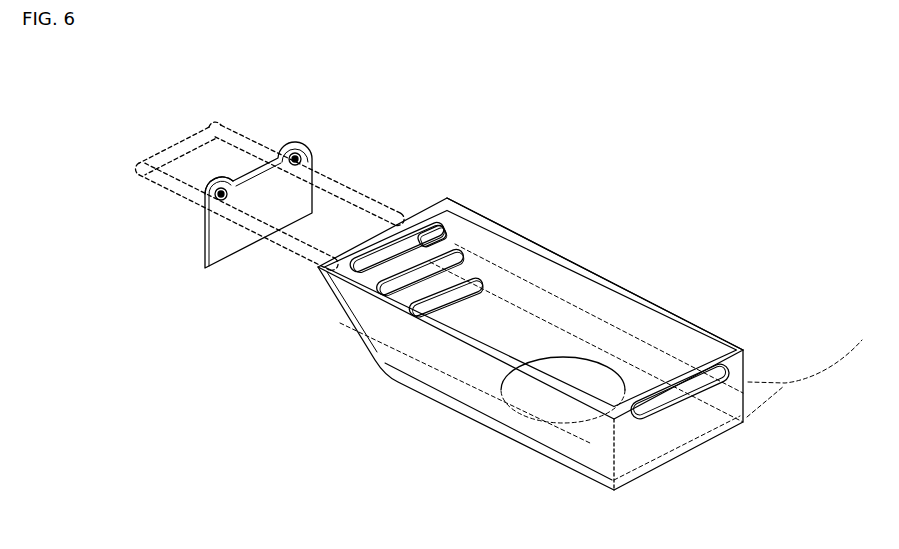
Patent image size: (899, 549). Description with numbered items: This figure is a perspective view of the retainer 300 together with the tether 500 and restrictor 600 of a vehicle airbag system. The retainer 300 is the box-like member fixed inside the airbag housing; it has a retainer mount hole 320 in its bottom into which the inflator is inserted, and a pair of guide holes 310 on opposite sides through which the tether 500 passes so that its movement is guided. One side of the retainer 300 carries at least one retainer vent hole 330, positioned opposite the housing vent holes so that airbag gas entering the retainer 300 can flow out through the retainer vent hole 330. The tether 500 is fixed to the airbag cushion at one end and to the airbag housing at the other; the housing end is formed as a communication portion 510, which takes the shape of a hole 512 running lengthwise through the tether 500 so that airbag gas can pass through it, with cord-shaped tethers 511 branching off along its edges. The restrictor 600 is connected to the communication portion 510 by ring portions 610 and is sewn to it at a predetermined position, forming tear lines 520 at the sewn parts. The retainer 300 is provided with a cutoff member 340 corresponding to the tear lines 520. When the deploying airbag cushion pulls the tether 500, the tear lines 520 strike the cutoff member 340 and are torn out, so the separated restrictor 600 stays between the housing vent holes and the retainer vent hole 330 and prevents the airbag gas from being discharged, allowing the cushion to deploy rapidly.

The retainer 300 is at (587, 268).
The guide holes 310 is at (410, 236).
The retainer mount hole 320 is at (495, 393).
The retainer vent hole 330 is at (405, 320).
The cutoff member 340 is at (474, 206).
The tether 500 is at (763, 392).
The communication portion 510 is at (218, 158).
The cord-shaped tethers 511 is at (243, 133).
The hole 512 is at (205, 122).
The tear lines 520 is at (222, 204).
The restrictor 600 is at (204, 243).
The ring portions 610 is at (204, 187).